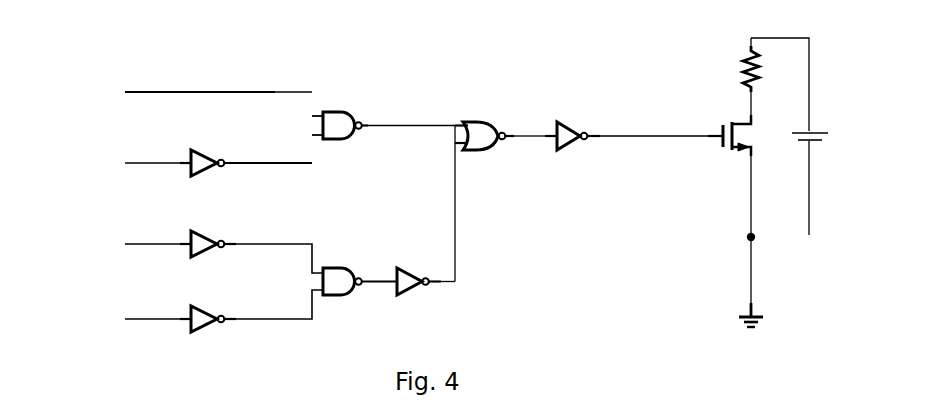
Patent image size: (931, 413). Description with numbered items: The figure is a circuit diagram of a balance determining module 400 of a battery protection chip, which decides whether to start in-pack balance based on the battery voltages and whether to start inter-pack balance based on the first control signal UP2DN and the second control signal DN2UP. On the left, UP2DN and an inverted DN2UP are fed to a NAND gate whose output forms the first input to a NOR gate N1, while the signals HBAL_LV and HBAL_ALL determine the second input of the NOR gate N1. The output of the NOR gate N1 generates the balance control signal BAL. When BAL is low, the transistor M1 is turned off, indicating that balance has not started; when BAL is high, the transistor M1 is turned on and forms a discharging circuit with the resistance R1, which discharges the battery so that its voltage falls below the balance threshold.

The balance determining module 400 is at (400, 82).
The NOR gate N1 is at (480, 125).
The transistor M1 is at (750, 135).
The resistance R1 is at (738, 69).